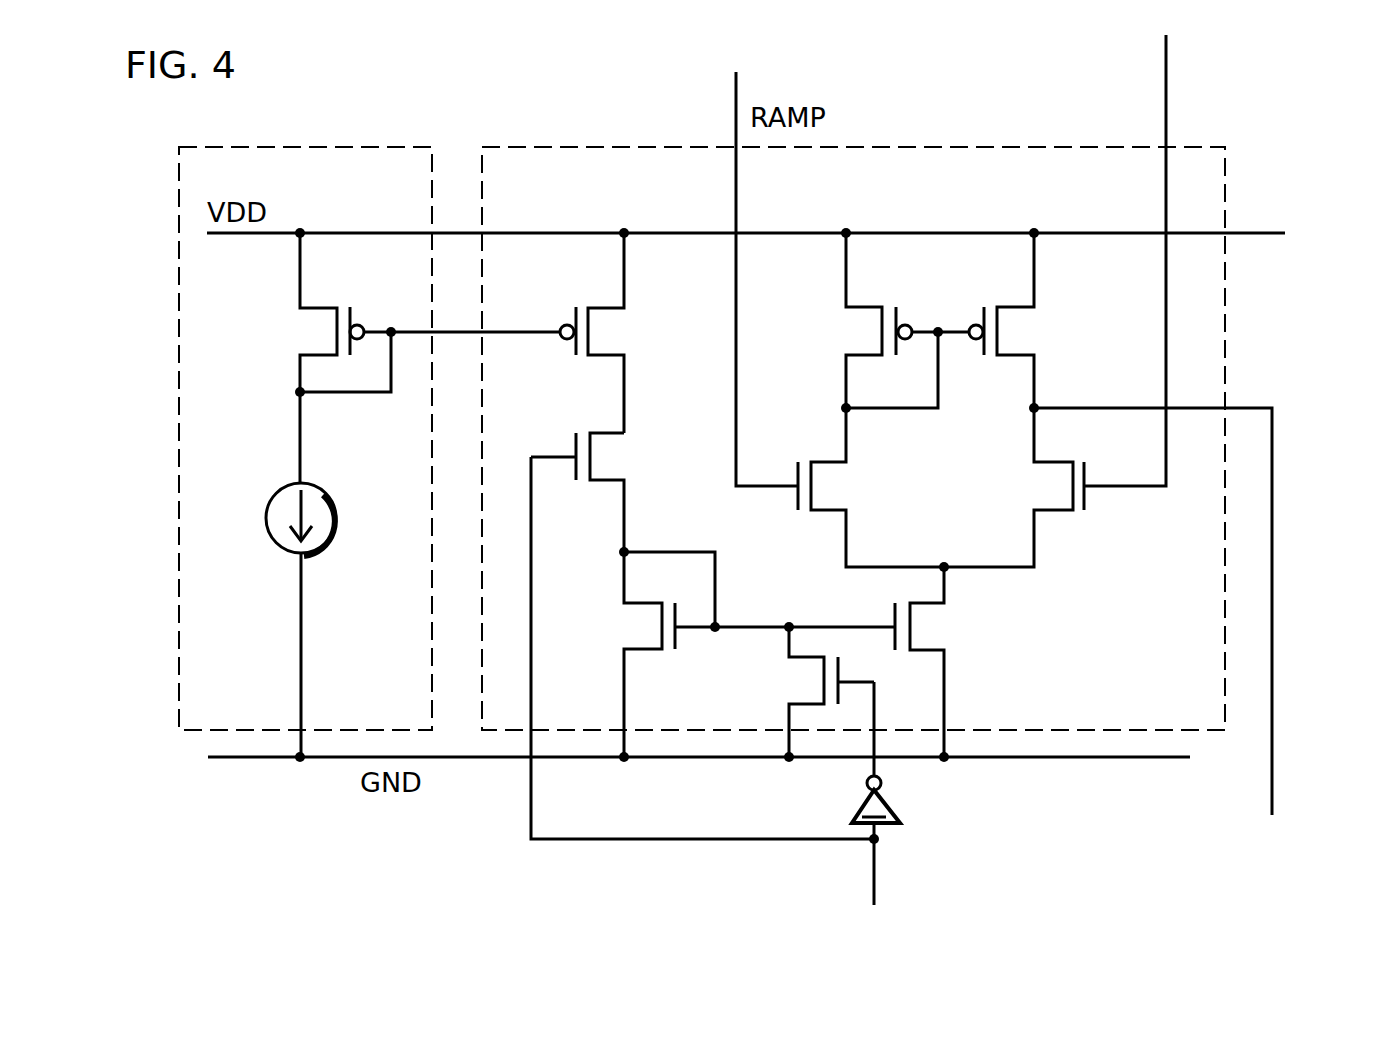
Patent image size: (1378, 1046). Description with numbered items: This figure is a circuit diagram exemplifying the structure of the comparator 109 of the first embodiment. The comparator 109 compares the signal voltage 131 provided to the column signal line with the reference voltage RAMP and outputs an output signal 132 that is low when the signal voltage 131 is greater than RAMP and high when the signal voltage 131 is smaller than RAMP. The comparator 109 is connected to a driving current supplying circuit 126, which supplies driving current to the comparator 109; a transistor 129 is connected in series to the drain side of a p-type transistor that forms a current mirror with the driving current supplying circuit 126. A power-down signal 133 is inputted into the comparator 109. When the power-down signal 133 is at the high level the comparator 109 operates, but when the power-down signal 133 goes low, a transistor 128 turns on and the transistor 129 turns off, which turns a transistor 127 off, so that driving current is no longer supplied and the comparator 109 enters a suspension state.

The comparator 109 is at (1224, 183).
The driving current supplying circuit 126 is at (352, 147).
The transistor 127 is at (942, 630).
The transistor 128 is at (795, 680).
The transistor 129 is at (618, 460).
The signal voltage 131 is at (1166, 92).
The output signal 132 is at (1272, 687).
The power-down signal 133 is at (874, 865).